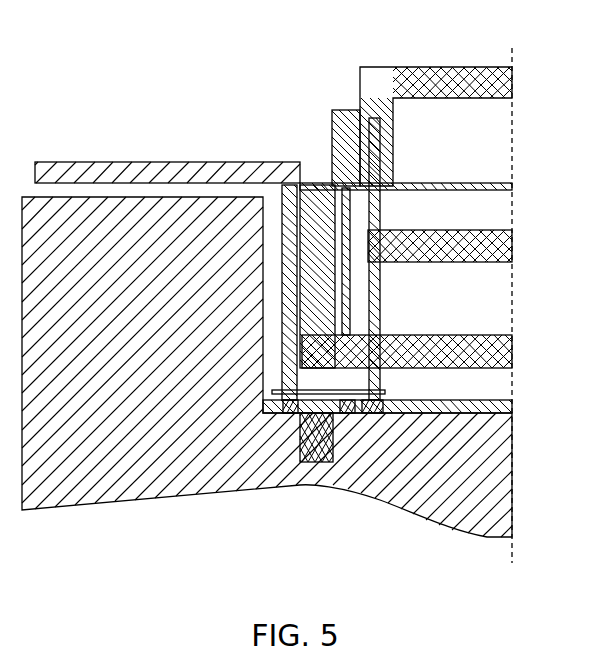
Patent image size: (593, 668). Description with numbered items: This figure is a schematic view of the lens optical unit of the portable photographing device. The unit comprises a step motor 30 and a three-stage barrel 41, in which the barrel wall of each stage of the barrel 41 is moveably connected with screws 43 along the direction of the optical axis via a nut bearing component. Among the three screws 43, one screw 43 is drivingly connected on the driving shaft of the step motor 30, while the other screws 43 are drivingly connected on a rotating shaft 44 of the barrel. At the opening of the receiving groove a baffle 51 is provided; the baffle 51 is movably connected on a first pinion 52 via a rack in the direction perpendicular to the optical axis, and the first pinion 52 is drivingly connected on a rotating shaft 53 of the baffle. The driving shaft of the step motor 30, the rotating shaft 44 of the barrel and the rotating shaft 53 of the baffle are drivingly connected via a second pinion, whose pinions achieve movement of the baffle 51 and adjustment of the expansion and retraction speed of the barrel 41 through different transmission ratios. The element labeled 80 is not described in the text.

The baffle 51 is at (175, 172).
The first pinion 52 is at (294, 192).
The rotating shaft of the baffle 53 is at (283, 235).
The three-stage barrel 41 is at (385, 230).
The screws 43 is at (349, 337).
The electrode 80 is at (300, 392).
The rotating shaft of the barrel 44 is at (298, 402).
The step motor 30 is at (333, 442).